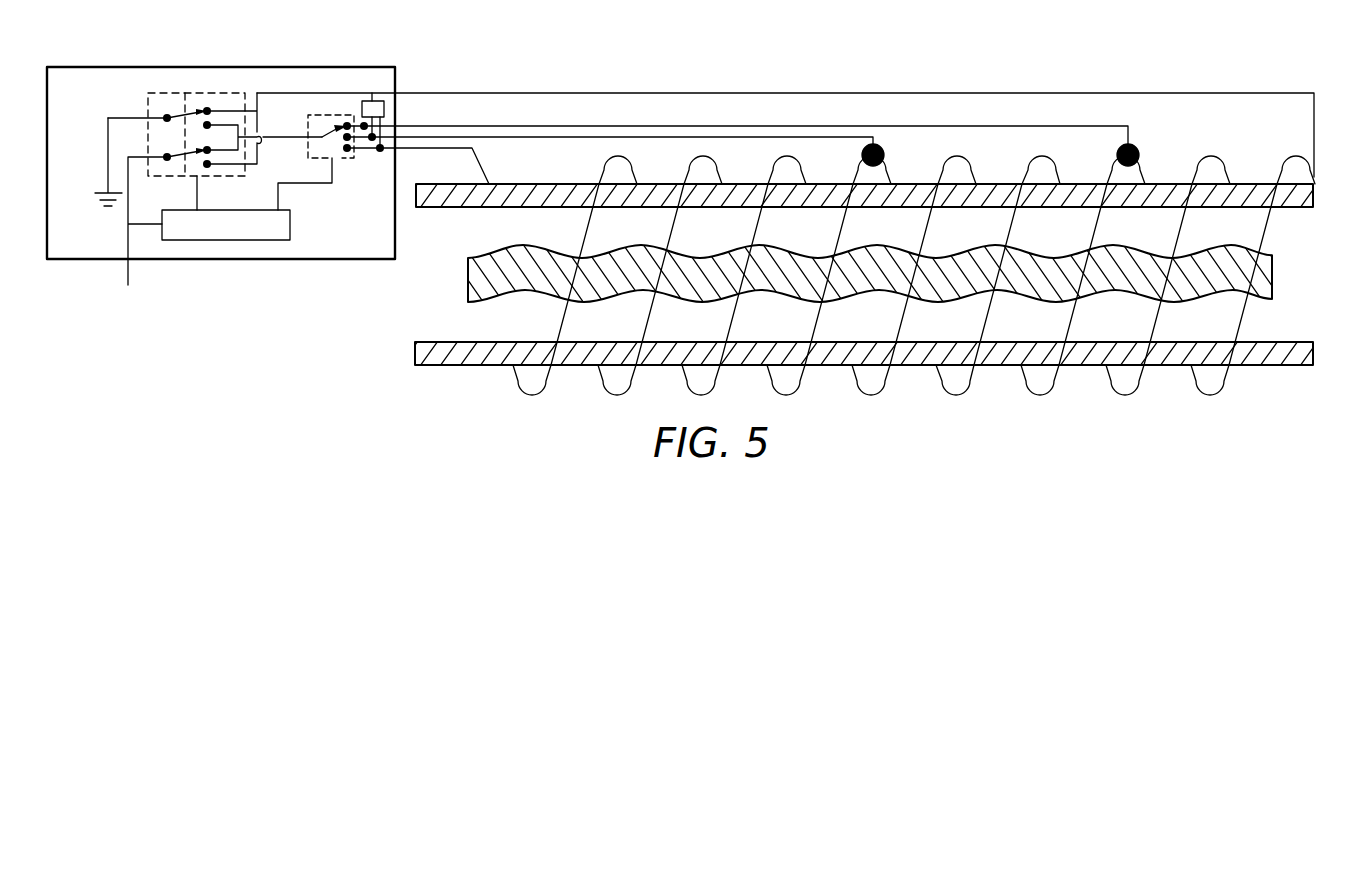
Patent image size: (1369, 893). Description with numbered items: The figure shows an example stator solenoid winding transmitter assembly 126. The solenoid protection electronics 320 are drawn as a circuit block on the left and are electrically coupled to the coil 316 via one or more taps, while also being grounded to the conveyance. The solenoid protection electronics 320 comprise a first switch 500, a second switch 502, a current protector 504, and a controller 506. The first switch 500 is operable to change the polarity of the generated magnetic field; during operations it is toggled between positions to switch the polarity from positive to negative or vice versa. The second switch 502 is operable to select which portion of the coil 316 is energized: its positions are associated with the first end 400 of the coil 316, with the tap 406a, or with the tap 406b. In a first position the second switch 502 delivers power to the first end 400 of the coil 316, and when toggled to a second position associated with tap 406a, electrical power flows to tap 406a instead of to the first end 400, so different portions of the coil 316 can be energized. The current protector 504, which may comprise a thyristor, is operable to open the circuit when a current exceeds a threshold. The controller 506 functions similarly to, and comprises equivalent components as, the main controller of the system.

The solenoid protection electronics 320 is at (100, 46).
The first switch 500 is at (205, 93).
The second switch 502 is at (333, 115).
The current protector 504 is at (384, 105).
The controller 506 is at (232, 240).
The first end of the coil 400 is at (497, 183).
The tap 406a is at (881, 147).
The tap 406b is at (1136, 147).
The coil 316 is at (1292, 227).
The stator solenoid winding transmitter assembly 126 is at (360, 348).